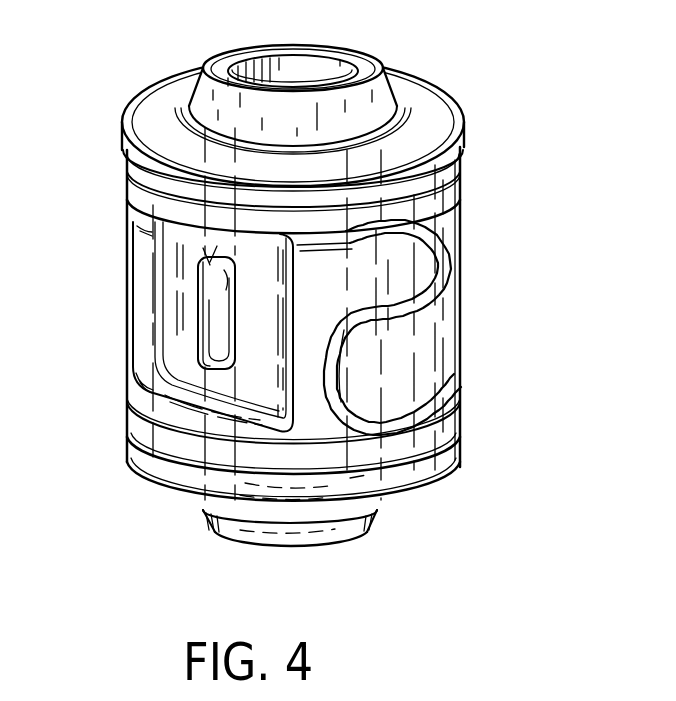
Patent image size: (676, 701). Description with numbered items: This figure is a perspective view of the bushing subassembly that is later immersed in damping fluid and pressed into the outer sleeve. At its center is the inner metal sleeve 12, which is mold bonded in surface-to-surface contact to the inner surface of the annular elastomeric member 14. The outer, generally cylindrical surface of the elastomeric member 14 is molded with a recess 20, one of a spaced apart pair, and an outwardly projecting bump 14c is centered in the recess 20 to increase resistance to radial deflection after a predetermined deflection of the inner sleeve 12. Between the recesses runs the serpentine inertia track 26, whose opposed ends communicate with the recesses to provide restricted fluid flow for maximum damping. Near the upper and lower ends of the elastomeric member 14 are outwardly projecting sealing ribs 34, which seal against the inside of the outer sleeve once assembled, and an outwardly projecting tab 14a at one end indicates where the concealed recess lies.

The inner metal sleeve 12 is at (336, 54).
The annular elastomeric member 14 is at (440, 219).
The outwardly projecting tab 14a is at (421, 100).
The outwardly projecting bump 14c is at (198, 313).
The recess 20 is at (148, 357).
The inertia track 26 is at (392, 317).
The sealing rib 34 is at (461, 175).